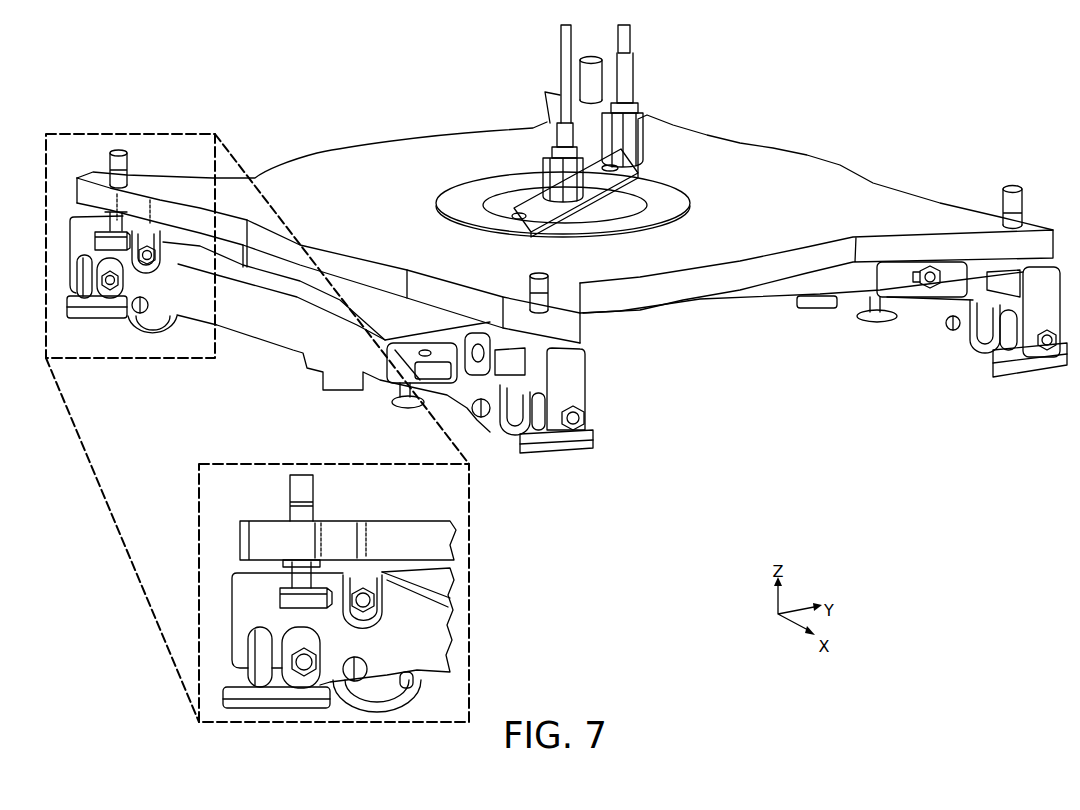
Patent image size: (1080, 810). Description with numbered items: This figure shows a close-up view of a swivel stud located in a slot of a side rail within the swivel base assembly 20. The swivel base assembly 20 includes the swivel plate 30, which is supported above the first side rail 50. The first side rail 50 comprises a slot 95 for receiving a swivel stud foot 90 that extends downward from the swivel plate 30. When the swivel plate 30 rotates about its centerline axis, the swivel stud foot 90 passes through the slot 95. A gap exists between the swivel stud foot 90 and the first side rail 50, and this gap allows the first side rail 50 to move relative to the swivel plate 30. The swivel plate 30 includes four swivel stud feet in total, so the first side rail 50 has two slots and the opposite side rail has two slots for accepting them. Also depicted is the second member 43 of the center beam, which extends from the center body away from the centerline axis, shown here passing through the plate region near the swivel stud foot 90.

The swivel base assembly 20 is at (349, 84).
The swivel plate 30 is at (752, 224).
The second member 43 is at (337, 535).
The first side rail 50 is at (252, 325).
The swivel stud foot 90 is at (326, 603).
The slot 95 is at (348, 610).